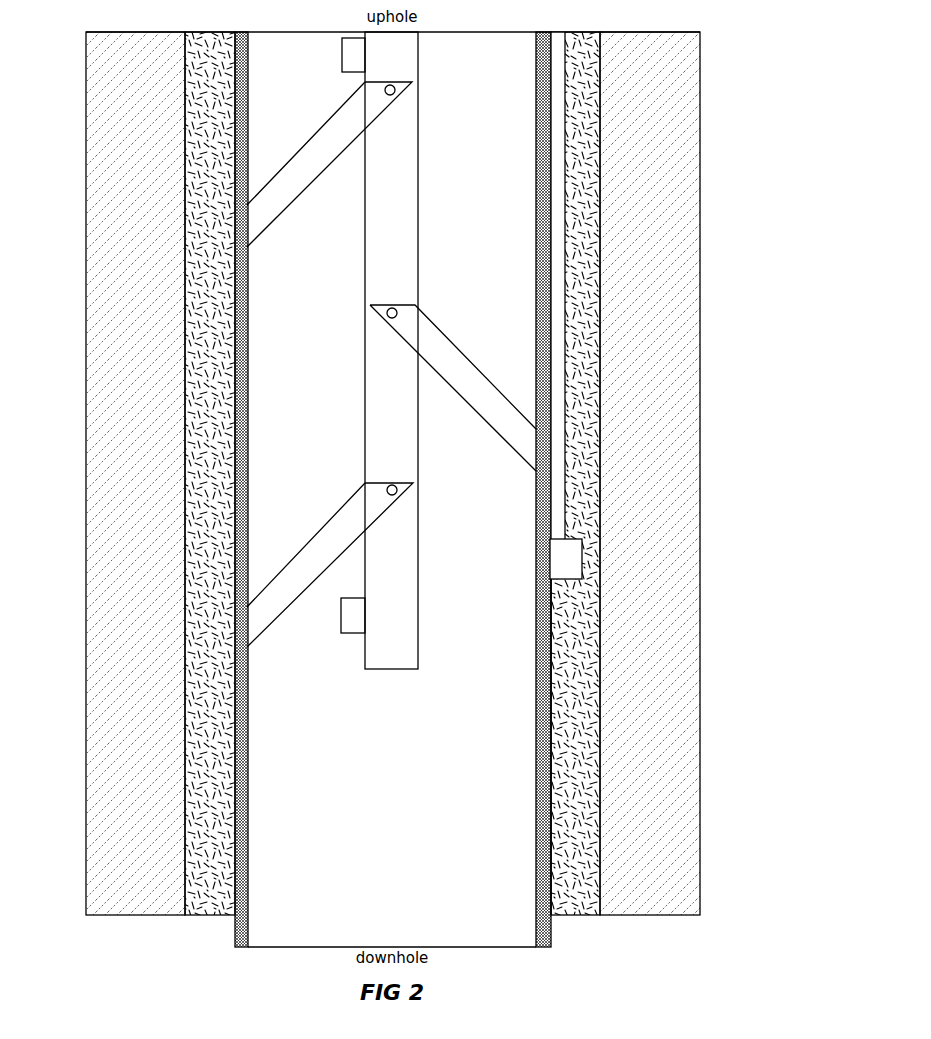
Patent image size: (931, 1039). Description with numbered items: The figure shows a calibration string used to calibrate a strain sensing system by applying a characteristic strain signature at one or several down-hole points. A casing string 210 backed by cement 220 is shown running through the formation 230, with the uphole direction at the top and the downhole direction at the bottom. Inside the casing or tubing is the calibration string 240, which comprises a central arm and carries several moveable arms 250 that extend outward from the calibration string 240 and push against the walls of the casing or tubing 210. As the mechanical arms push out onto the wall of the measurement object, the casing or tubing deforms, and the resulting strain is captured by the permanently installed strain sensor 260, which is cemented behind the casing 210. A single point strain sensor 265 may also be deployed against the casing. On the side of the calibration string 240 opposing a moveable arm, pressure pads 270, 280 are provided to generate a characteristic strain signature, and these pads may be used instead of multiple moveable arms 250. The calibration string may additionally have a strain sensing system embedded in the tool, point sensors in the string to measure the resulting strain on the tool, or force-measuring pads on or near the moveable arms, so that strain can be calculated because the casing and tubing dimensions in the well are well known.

The casing string 210 is at (235, 813).
The cement 220 is at (215, 340).
The formation 230 is at (140, 455).
The calibration string 240 is at (385, 265).
The moveable arms 250 is at (342, 124).
The strain sensor 260 is at (567, 182).
The single point strain sensor 265 is at (565, 560).
The pressure pad 270 is at (340, 628).
The pressure pad 280 is at (340, 57).